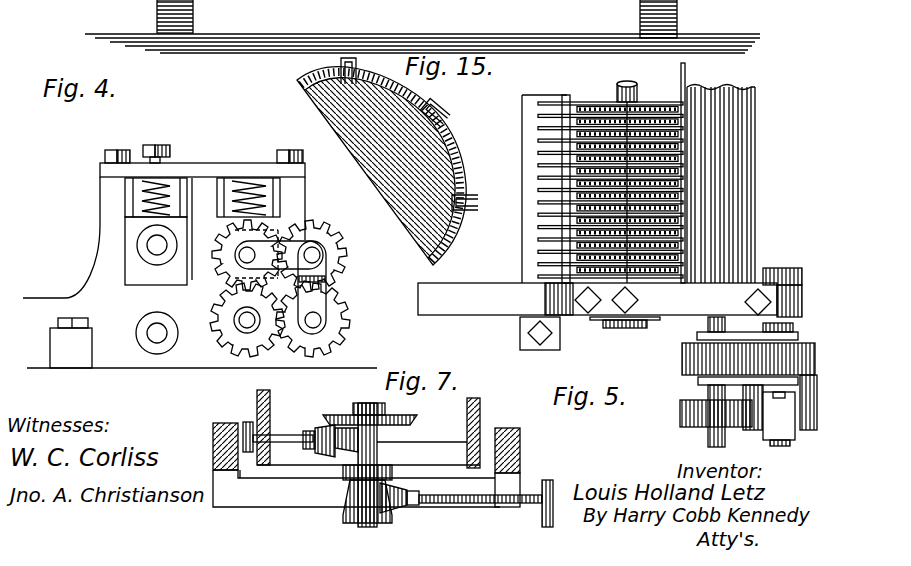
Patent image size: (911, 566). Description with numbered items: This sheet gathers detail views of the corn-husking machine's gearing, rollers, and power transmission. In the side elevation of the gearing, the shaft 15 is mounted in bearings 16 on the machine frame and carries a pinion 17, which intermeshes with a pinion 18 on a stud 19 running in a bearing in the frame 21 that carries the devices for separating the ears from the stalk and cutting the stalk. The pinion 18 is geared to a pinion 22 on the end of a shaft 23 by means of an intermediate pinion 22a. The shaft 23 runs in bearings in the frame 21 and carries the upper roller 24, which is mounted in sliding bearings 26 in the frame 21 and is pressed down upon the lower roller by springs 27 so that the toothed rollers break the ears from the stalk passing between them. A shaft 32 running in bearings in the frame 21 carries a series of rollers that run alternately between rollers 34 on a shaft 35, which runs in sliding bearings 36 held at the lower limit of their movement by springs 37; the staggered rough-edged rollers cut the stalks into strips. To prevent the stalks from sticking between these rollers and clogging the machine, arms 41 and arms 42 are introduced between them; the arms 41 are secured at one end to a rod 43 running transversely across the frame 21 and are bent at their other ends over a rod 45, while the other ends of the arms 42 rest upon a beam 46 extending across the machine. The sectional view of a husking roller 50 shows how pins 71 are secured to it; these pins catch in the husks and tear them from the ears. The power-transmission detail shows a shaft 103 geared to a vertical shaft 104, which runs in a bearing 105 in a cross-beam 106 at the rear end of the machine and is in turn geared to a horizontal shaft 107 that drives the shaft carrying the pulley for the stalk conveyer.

In FIG. 4, the shaft 15 is at (240, 326).
In FIG. 5, the bearings 16 is at (622, 345).
In FIG. 4, the pinion 17 is at (247, 342).
In FIG. 5, the pinion 17 is at (682, 418).
In FIG. 4, the pinion 18 is at (333, 326).
In FIG. 5, the pinion 18 is at (694, 455).
In FIG. 4, the stud 19 is at (316, 319).
In FIG. 4, the frame 21 is at (163, 328).
In FIG. 5, the frame 21 is at (610, 309).
In FIG. 4, the pinion 22 is at (257, 231).
In FIG. 5, the pinion 22 is at (677, 373).
In FIG. 4, the intermediate pinion 22a is at (330, 250).
In FIG. 5, the intermediate pinion 22a is at (808, 343).
In FIG. 4, the shaft 23 is at (245, 256).
In FIG. 5, the shaft 23 is at (710, 327).
In FIG. 5, the roller 24 is at (747, 192).
In FIG. 4, the sliding bearings 26 is at (207, 232).
In FIG. 4, the springs 27 is at (258, 193).
In FIG. 4, the shaft 32 is at (157, 338).
In FIG. 5, the rollers 34 is at (595, 118).
In FIG. 4, the shaft 35 is at (155, 247).
In FIG. 5, the shaft 35 is at (617, 90).
In FIG. 4, the sliding bearing 36 is at (132, 230).
In FIG. 4, the springs 37 is at (178, 200).
In FIG. 5, the arms 41 is at (538, 192).
In FIG. 5, the arms 42 is at (538, 125).
In FIG. 5, the rod 43 is at (562, 93).
In FIG. 5, the rod 45 is at (686, 70).
In FIG. 5, the beam 46 is at (527, 253).
In FIG. 15, the rollers 50 is at (385, 165).
In FIG. 15, the pins 71 is at (358, 68).
In FIG. 7, the shaft 103 is at (528, 497).
In FIG. 7, the vertical shaft 104 is at (370, 440).
In FIG. 7, the bearing 105 is at (347, 470).
In FIG. 7, the cross-beam 106 is at (263, 493).
In FIG. 7, the horizontal shaft 107 is at (277, 435).